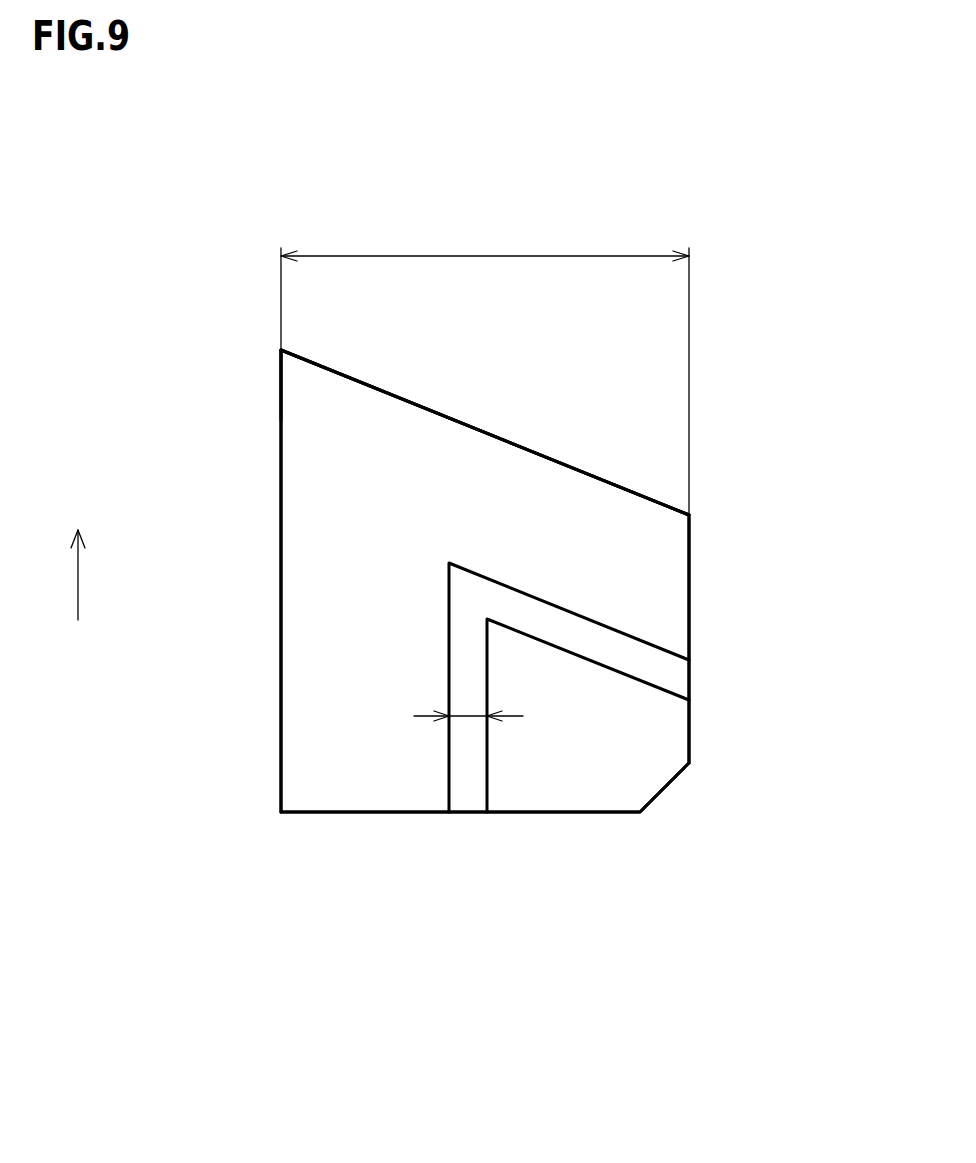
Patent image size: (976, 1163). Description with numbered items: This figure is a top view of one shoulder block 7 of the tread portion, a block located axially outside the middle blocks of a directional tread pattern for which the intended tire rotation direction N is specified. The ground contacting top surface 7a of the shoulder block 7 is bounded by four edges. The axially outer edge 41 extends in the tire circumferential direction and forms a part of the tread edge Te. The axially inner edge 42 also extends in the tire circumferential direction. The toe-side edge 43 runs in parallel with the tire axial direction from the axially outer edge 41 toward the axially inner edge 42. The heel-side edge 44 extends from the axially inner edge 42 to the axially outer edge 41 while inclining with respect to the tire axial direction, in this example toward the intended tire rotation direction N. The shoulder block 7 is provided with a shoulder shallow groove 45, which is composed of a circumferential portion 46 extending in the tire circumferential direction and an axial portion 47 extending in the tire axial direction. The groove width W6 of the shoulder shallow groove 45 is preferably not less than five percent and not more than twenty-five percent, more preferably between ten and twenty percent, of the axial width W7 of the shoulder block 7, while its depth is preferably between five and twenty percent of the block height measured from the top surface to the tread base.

The shoulder block 7 is at (730, 463).
The ground contacting top surface 7a is at (512, 503).
The heel-side edge 44 is at (387, 392).
The tread edge Te is at (281, 415).
The axially outer edge 41 is at (281, 595).
The axially inner edge 42 is at (689, 593).
The toe-side edge 43 is at (578, 812).
The shoulder shallow groove 45 is at (544, 768).
The circumferential portion 46 is at (468, 760).
The axial portion 47 is at (600, 645).
The axial width W7 is at (485, 368).
The groove width W6 is at (468, 713).
The intended tire rotation direction N is at (78, 559).